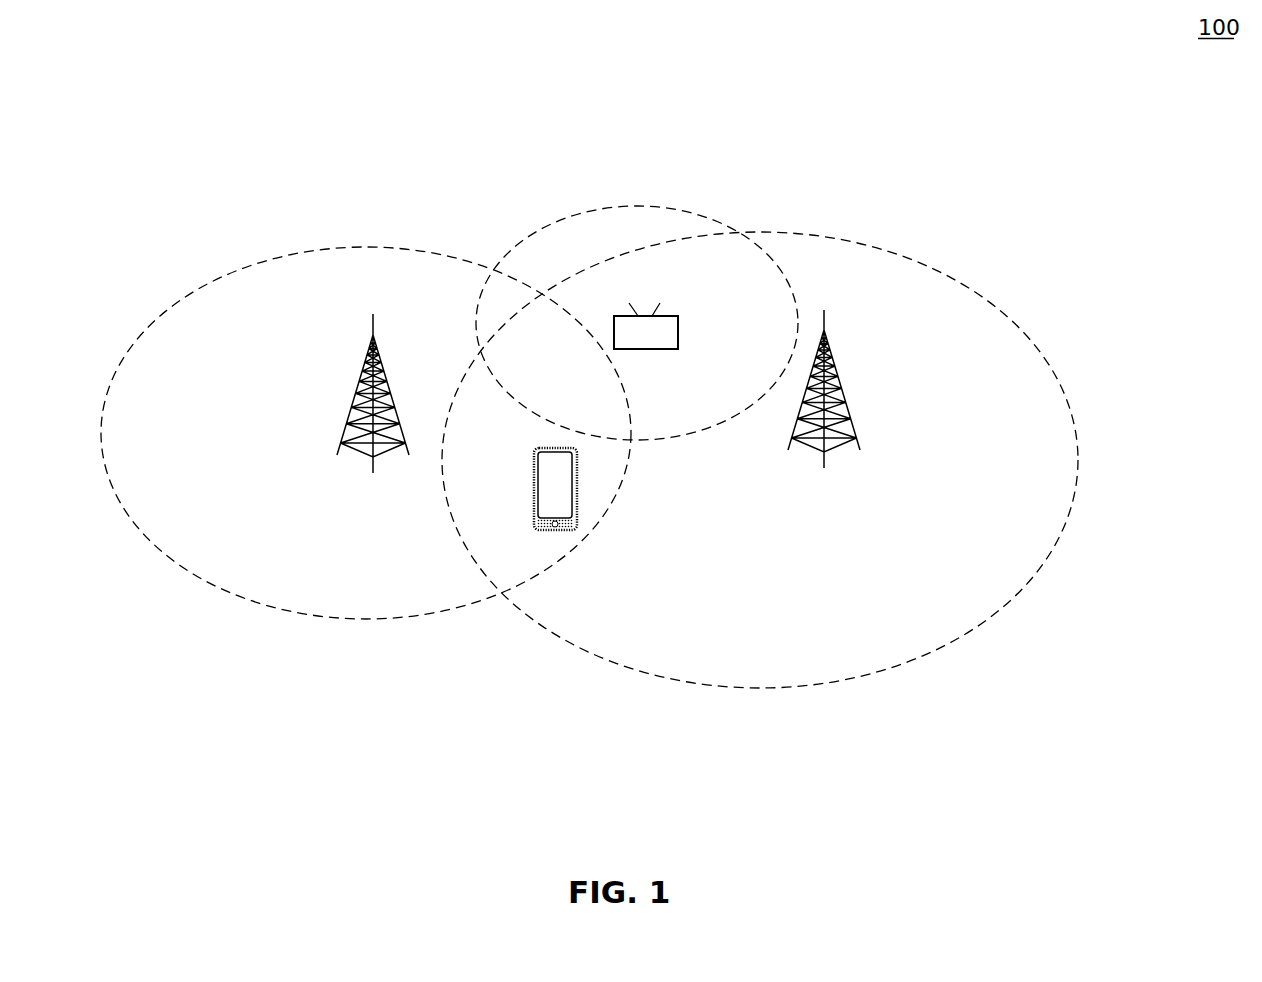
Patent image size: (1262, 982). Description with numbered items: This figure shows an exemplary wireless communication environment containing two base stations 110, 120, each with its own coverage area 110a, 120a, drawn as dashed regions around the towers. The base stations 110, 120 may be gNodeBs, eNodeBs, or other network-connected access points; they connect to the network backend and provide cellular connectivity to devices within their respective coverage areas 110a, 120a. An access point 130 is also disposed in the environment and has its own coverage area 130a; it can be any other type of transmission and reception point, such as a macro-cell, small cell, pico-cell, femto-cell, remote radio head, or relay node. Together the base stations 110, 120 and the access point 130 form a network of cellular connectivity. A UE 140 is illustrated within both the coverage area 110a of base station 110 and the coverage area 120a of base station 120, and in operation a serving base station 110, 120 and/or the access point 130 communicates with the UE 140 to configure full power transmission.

The base station 110 is at (370, 333).
The coverage area 110a is at (210, 584).
The base station 120 is at (828, 336).
The coverage area 120a is at (1050, 366).
The access point 130 is at (678, 330).
The coverage area 130a is at (692, 213).
The UE 140 is at (532, 489).